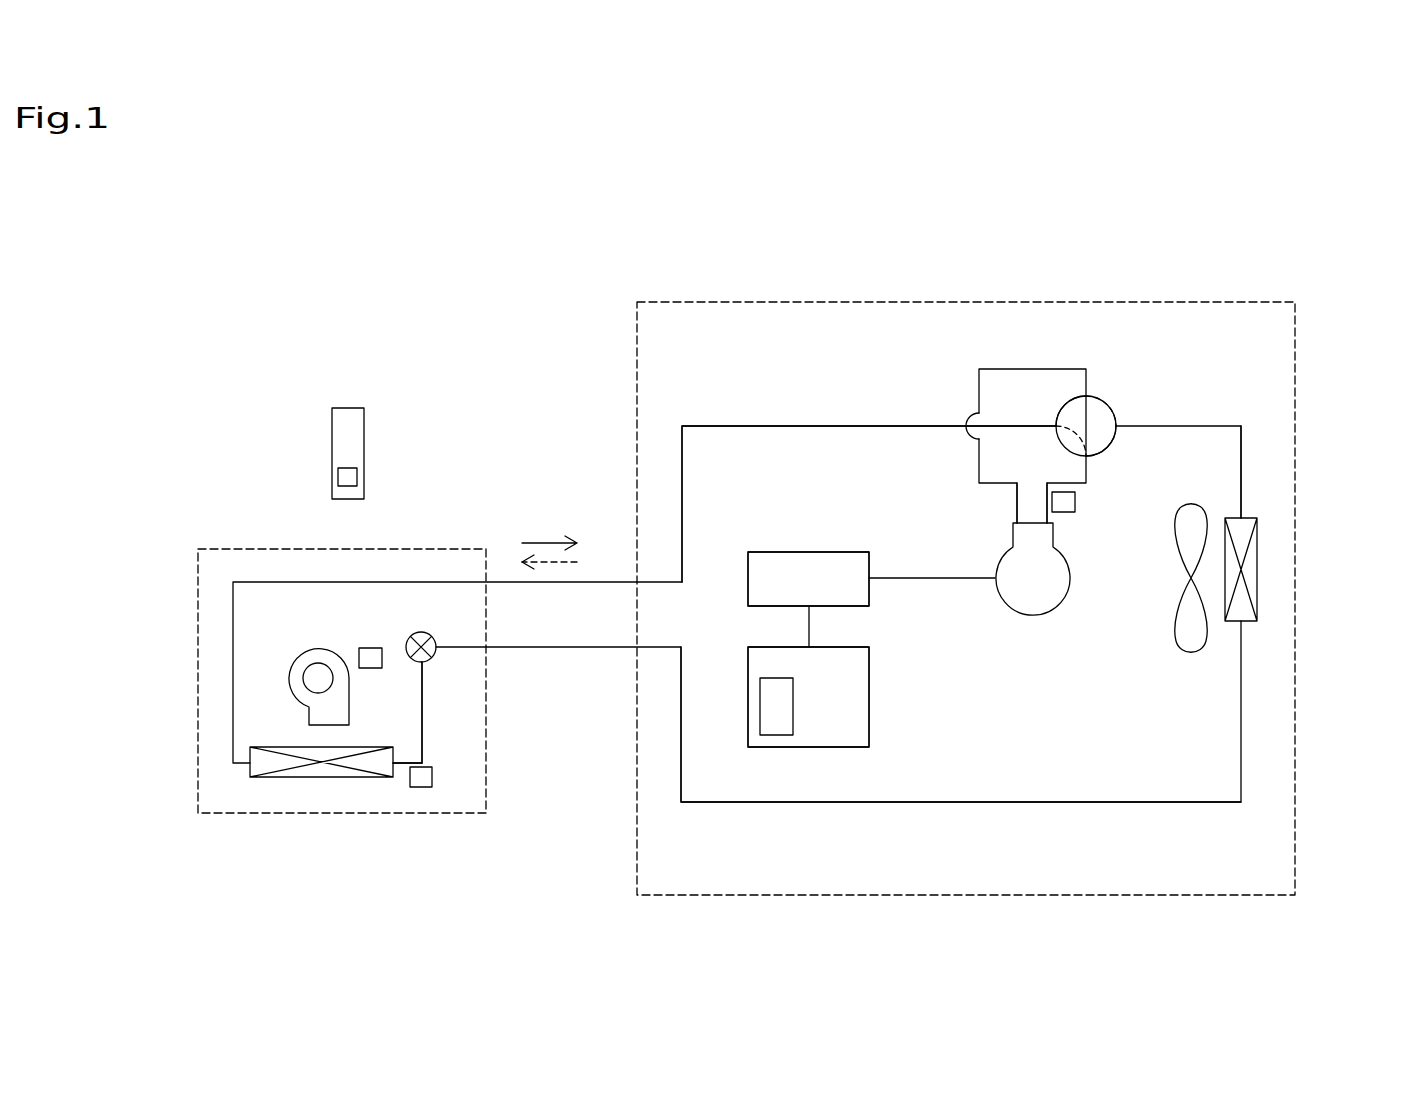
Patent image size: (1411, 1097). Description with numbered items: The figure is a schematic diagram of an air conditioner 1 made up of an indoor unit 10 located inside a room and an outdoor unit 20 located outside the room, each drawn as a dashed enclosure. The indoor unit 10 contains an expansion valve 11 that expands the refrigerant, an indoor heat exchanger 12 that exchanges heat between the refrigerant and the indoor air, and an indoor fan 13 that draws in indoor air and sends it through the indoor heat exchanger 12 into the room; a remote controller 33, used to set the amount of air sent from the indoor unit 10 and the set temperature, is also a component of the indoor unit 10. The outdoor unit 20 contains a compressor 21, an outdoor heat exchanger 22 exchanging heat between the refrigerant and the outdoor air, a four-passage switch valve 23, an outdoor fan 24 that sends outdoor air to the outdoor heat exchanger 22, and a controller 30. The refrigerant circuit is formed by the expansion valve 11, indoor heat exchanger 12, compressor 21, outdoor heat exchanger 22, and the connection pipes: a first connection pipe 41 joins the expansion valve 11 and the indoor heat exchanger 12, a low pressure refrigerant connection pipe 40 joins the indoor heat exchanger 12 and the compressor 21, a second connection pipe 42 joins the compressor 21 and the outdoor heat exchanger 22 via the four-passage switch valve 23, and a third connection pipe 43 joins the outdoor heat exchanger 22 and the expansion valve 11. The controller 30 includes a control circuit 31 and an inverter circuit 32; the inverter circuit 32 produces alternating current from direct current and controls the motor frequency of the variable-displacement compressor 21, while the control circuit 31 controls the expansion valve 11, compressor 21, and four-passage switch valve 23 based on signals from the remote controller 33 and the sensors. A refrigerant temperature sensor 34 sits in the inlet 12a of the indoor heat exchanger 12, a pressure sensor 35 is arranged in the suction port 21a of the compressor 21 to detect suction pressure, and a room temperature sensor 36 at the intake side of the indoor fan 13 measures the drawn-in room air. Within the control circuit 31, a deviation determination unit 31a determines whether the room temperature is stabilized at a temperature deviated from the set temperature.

The air conditioner 1 is at (1278, 206).
The indoor unit 10 is at (157, 410).
The expansion valve 11 is at (433, 658).
The indoor heat exchanger 12 is at (292, 778).
The inlet 12a is at (397, 765).
The indoor fan 13 is at (318, 648).
The outdoor unit 20 is at (1326, 334).
The compressor 21 is at (1030, 617).
The suction port 21a is at (1050, 517).
The outdoor heat exchanger 22 is at (1258, 597).
The four-passage switch valve 23 is at (1108, 402).
The outdoor fan 24 is at (1190, 656).
The controller 30 is at (932, 587).
The control circuit 31 is at (870, 655).
The deviation determination unit 31a is at (775, 736).
The inverter circuit 32 is at (870, 596).
The remote controller 33 is at (332, 455).
The refrigerant temperature sensor 34 is at (432, 777).
The pressure sensor 35 is at (1076, 502).
The room temperature sensor 36 is at (370, 648).
The low pressure refrigerant connection pipe 40 is at (777, 426).
The first connection pipe 41 is at (423, 737).
The second connection pipe 42 is at (1243, 483).
The third connection pipe 43 is at (1122, 803).